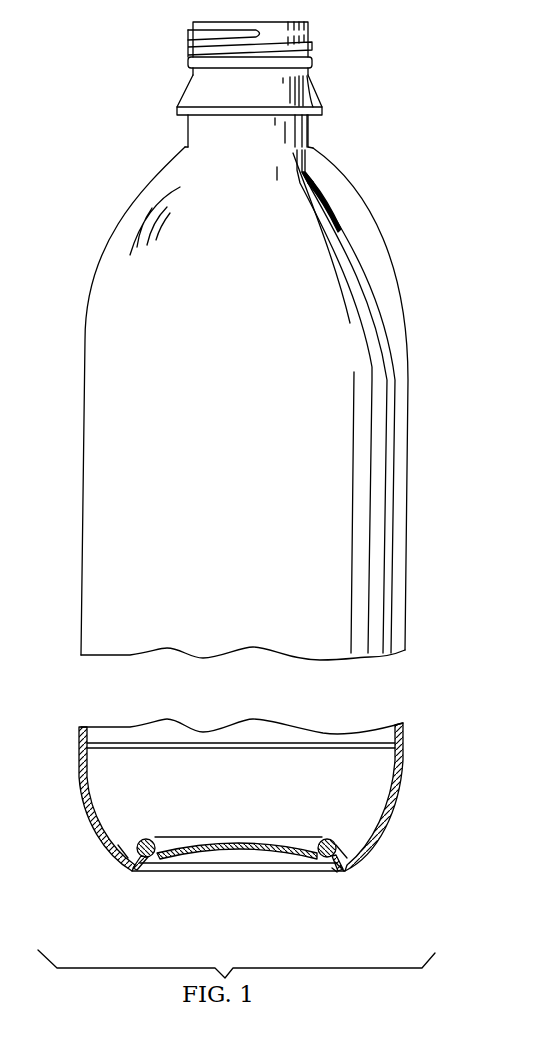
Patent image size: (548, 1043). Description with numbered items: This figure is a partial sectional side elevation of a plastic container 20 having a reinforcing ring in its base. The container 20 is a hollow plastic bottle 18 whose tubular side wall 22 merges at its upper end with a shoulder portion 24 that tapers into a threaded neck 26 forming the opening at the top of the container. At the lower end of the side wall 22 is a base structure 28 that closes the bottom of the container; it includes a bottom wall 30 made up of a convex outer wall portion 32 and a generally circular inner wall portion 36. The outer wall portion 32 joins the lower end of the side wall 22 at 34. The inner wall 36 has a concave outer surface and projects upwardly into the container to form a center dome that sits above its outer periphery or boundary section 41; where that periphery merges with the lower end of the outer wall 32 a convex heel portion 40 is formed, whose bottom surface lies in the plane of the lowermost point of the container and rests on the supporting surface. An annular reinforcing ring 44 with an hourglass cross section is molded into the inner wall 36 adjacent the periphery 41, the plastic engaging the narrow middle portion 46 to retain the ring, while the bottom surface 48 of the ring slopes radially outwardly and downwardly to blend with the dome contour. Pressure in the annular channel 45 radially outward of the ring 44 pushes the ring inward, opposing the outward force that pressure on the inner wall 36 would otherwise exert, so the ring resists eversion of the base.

The hollow plastic bottle 18 is at (407, 298).
The plastic container 20 is at (425, 442).
The tubular side wall 22 is at (407, 597).
The shoulder portion 24 is at (372, 208).
The threaded neck 26 is at (312, 48).
The base structure 28 is at (443, 811).
The bottom wall 30 is at (372, 881).
The convex outer wall portion 32 is at (367, 858).
The merger of outer wall portion and side wall 34 is at (403, 748).
The inner wall portion 36 is at (242, 840).
The convex heel portion 40 is at (343, 870).
The boundary section 41 is at (335, 873).
The annular reinforcing ring 44 is at (145, 833).
The annular channel 45 is at (124, 847).
The narrow middle portion 46 is at (345, 853).
The bottom surface of ring 48 is at (340, 867).